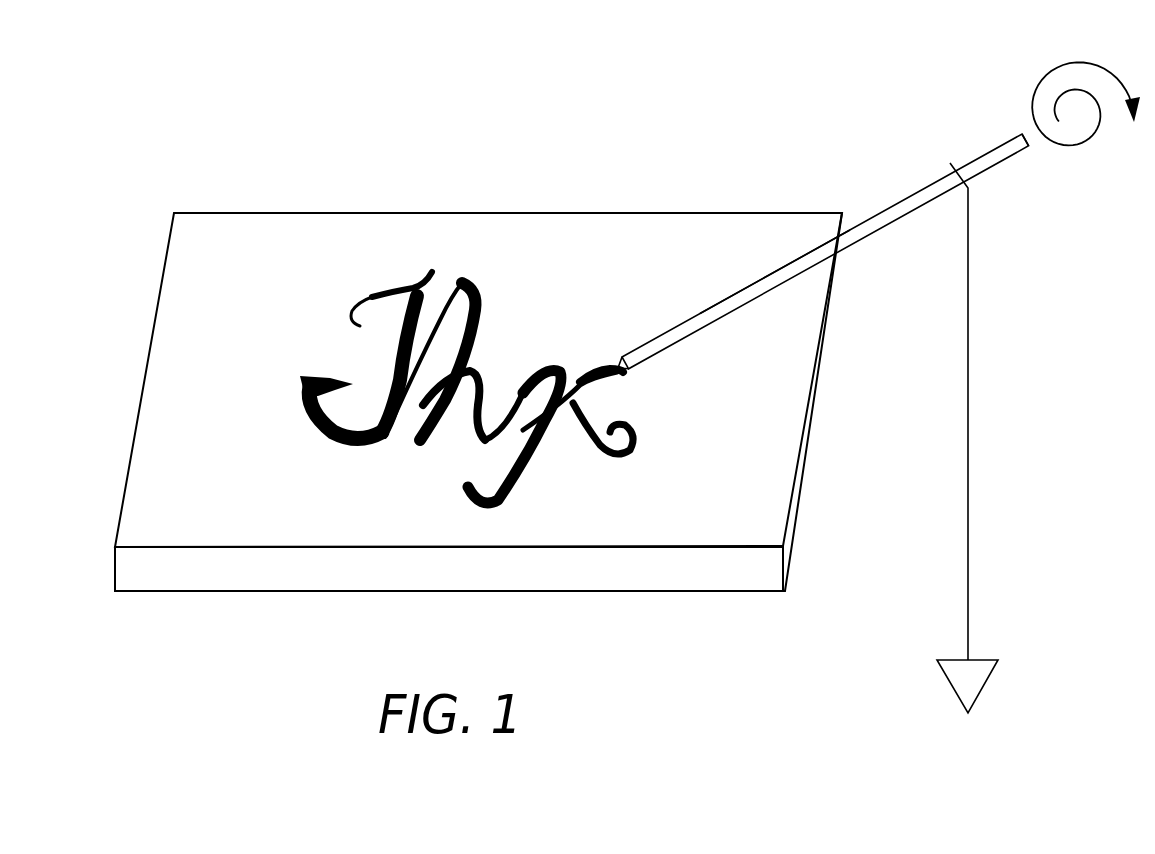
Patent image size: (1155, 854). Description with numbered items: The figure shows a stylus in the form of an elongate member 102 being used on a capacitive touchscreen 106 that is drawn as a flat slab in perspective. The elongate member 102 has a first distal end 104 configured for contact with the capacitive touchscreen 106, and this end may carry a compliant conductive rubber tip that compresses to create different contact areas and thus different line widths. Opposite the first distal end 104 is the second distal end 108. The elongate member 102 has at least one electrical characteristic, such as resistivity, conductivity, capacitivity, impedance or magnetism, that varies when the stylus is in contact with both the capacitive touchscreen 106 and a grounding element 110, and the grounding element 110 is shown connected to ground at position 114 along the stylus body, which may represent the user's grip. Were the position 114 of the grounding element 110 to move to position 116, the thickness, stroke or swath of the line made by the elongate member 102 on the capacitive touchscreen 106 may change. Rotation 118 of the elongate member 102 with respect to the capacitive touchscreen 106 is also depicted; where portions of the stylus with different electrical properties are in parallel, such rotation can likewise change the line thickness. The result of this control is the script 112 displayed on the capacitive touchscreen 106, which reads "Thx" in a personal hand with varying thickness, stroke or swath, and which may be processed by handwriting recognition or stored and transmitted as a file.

The elongate member 102 is at (893, 204).
The first distal end 104 is at (617, 362).
The capacitive touchscreen 106 is at (215, 212).
The second distal end 108 is at (1008, 140).
The grounding element 110 is at (947, 660).
The script 112 is at (302, 377).
The position of the grounding element 114 is at (947, 176).
The alternate position of the grounding element 116 is at (686, 318).
The rotation 118 is at (1033, 88).